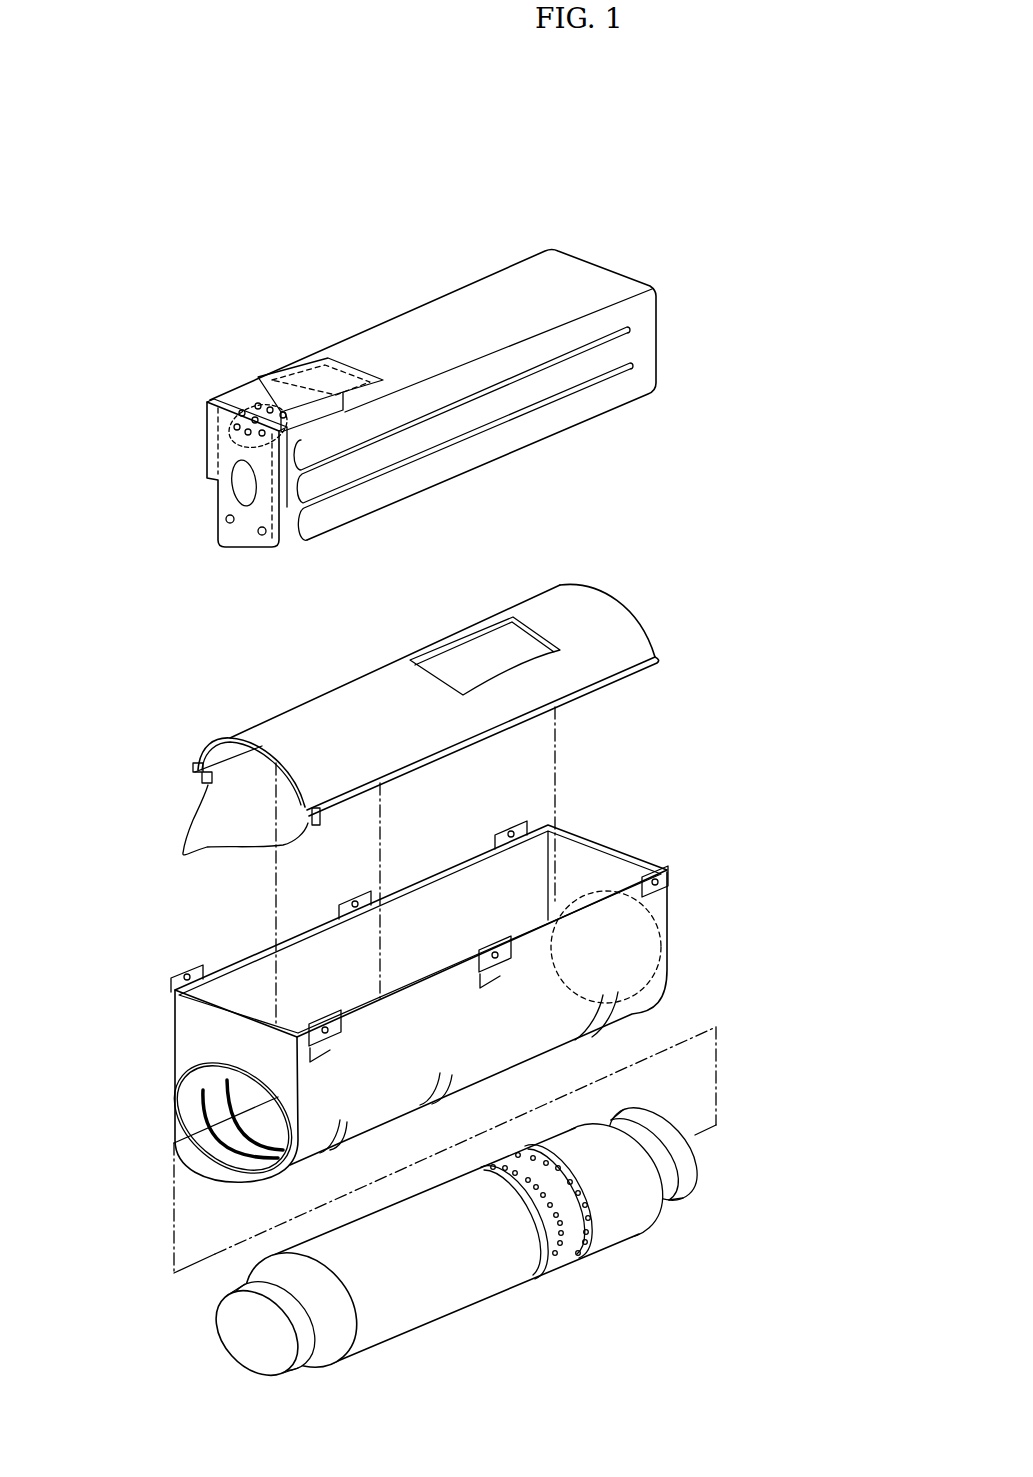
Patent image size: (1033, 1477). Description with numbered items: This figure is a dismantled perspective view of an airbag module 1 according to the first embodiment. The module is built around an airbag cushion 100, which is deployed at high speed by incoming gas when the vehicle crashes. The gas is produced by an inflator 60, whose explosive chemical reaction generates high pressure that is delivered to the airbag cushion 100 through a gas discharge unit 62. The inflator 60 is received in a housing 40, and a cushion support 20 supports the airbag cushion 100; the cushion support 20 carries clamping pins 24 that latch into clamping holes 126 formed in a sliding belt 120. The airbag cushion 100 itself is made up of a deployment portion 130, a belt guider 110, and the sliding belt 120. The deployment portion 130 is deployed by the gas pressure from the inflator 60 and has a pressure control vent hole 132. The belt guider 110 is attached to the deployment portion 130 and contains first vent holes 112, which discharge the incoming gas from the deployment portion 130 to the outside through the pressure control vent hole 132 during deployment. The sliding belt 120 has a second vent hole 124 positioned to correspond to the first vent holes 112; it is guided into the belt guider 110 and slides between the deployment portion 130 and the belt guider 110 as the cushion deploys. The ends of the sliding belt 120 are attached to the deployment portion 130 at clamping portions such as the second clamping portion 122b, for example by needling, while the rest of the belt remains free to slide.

The airbag module 1 is at (158, 336).
The cushion support 20 is at (630, 638).
The clamping pins 24 is at (186, 838).
The housing 40 is at (655, 902).
The inflator 60 is at (623, 1222).
The gas discharge unit 62 is at (573, 1233).
The airbag cushion 100 is at (633, 255).
The belt guider 110 is at (208, 448).
The first vent holes 112 is at (243, 413).
The sliding belt 120 is at (317, 383).
The second clamping portion 122b is at (348, 373).
The second vent hole 124 is at (226, 503).
The clamping holes 126 is at (258, 538).
The deployment portion 130 is at (562, 300).
The pressure control vent hole 132 is at (245, 393).